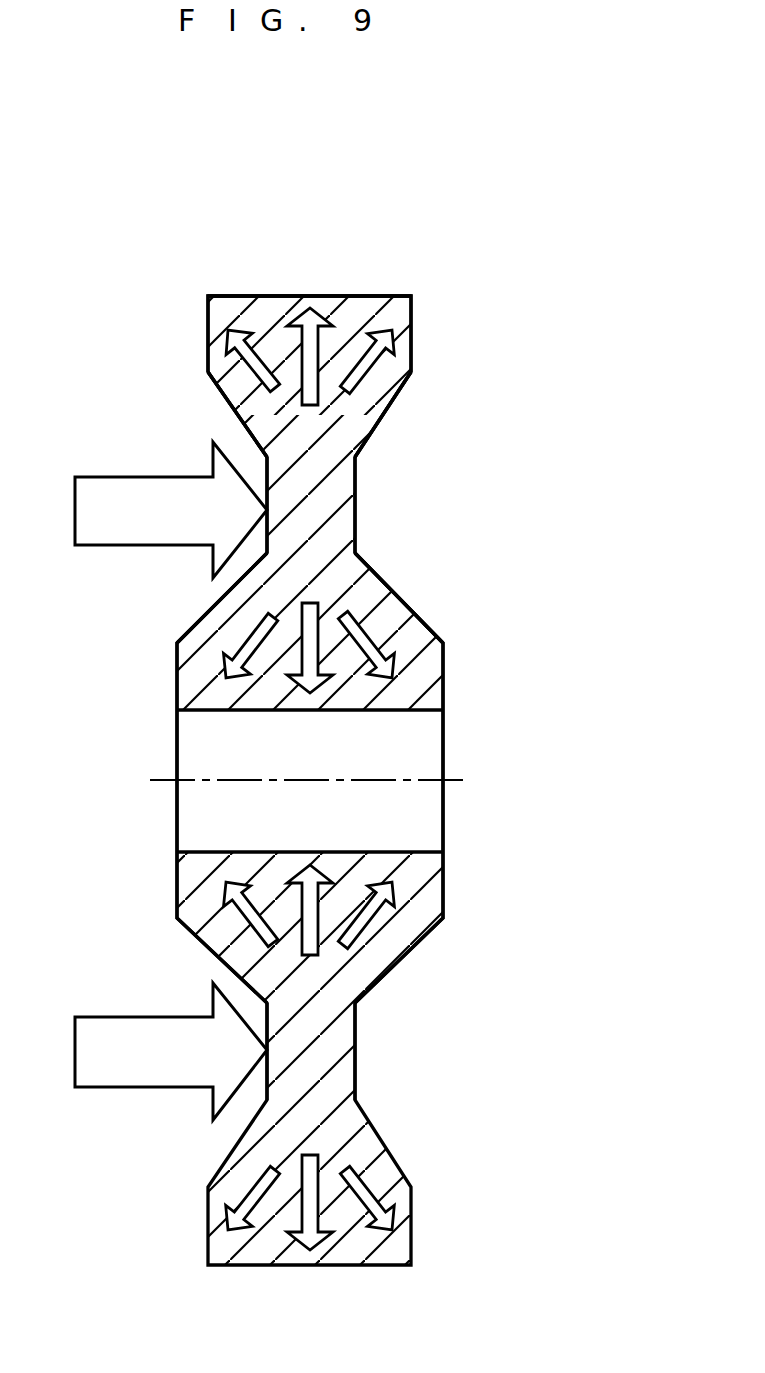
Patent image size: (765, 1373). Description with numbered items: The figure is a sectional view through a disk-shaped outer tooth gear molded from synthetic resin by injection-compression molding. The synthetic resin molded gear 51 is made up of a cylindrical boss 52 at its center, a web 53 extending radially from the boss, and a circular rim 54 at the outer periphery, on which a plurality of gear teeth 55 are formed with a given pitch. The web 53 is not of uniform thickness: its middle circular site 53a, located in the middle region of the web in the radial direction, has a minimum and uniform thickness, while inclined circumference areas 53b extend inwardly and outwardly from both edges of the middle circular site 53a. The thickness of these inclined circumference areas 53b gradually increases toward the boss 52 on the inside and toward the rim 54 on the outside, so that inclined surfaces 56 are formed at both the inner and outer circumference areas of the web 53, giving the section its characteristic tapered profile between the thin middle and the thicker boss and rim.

The synthetic resin molded gear 51 is at (324, 1342).
The cylindrical boss 52 is at (415, 675).
The web 53 is at (360, 1068).
The middle circular site 53a is at (322, 520).
The inclined circumference areas 53b is at (343, 405).
The circular rim 54 is at (398, 307).
The gear teeth 55 is at (318, 297).
The inclined surfaces 56 is at (224, 396).